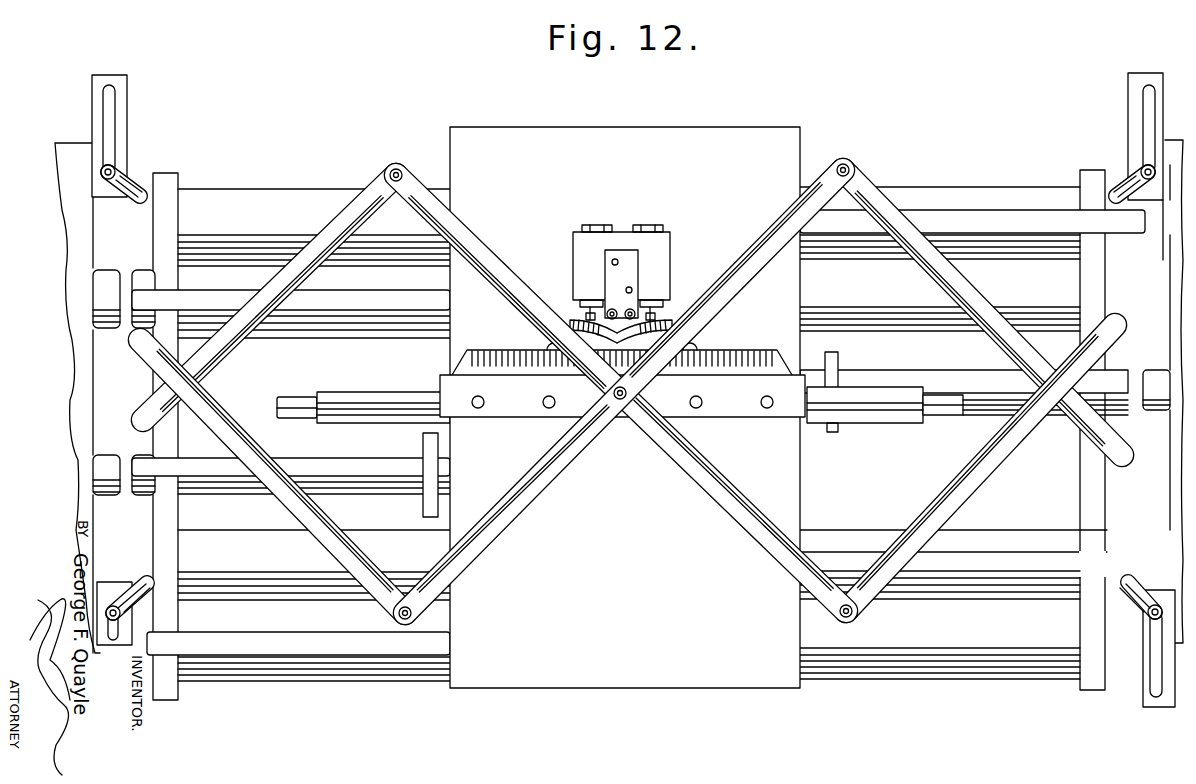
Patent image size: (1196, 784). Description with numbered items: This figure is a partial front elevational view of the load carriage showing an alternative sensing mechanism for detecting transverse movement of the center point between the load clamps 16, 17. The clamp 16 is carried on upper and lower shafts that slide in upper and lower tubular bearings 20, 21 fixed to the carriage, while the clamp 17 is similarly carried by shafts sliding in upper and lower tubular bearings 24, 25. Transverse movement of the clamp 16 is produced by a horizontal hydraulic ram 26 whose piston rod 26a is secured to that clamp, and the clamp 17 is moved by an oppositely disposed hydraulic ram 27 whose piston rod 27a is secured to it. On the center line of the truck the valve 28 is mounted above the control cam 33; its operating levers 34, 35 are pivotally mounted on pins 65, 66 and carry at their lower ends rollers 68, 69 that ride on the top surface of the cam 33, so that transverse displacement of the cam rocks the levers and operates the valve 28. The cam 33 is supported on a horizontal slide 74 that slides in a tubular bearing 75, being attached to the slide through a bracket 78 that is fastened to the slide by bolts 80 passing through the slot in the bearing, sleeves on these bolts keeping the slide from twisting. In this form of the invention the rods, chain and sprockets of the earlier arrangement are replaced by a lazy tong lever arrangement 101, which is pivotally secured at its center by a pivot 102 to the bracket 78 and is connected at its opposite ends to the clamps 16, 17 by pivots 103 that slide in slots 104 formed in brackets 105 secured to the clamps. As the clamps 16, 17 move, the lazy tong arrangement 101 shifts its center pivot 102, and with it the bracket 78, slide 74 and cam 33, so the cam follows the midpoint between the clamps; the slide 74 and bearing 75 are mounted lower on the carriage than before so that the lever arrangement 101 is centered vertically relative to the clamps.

The load clamp 16 is at (82, 452).
The load clamp 17 is at (1172, 485).
The upper tubular bearing 20 is at (960, 331).
The lower tubular bearing 21 is at (256, 680).
The upper tubular bearing 24 is at (983, 193).
The lower tubular bearing 25 is at (252, 512).
The hydraulic ram 26 is at (428, 452).
The piston rod 26a is at (358, 465).
The hydraulic ram 27 is at (812, 366).
The piston rod 27a is at (990, 404).
The valve 28 is at (672, 250).
The control cam 33 is at (746, 352).
The operating lever 34 is at (575, 322).
The operating lever 35 is at (668, 322).
The pin 65 is at (608, 309).
The pin 66 is at (640, 306).
The roller 68 is at (548, 342).
The roller 69 is at (696, 344).
The horizontal slide 74 is at (937, 394).
The tubular bearing 75 is at (877, 392).
The bracket 78 is at (740, 410).
The bolts 80 is at (547, 409).
The lazy tong lever arrangement 101 is at (134, 182).
The pivot 102 is at (622, 401).
The pivots 103 is at (116, 167).
The slots 104 is at (112, 106).
The brackets 105 is at (120, 76).